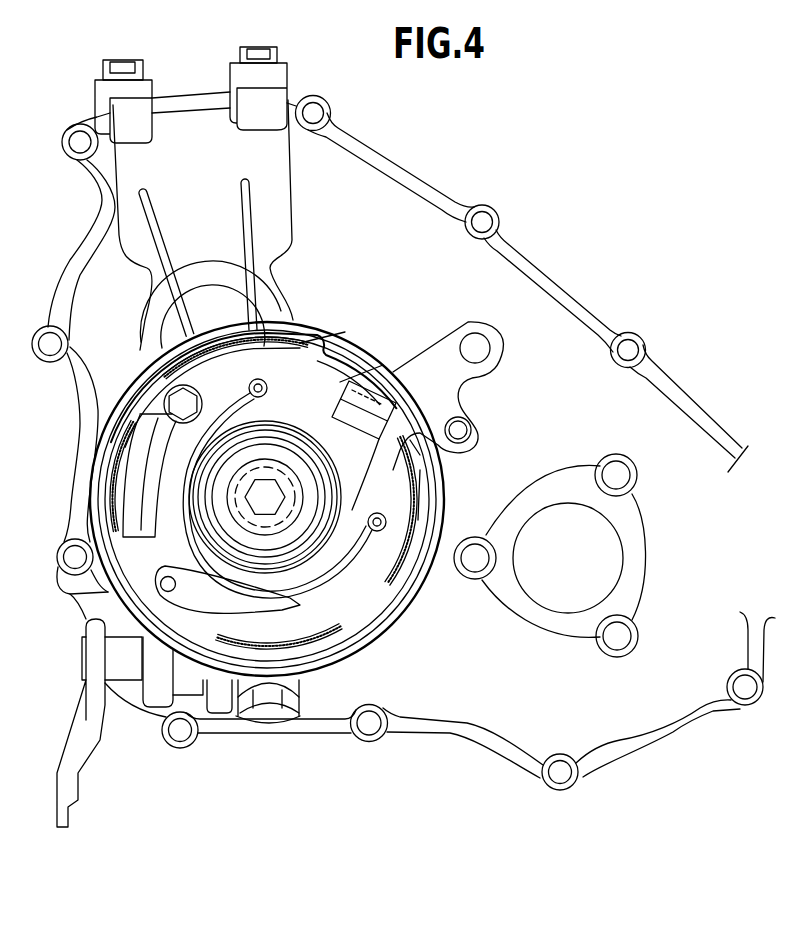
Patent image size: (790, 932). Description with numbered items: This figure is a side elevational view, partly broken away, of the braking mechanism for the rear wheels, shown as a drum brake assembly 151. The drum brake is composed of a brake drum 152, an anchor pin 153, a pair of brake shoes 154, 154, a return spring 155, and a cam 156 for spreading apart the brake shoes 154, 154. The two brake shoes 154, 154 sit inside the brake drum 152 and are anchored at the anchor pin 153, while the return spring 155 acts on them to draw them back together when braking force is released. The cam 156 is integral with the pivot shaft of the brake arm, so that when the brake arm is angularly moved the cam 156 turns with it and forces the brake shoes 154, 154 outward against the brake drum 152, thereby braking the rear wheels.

The belt tensioner assembly 151 is at (128, 358).
The brake drum 152 is at (287, 347).
The anchor pin 153 is at (160, 586).
The brake shoes 154 is at (305, 352).
The return spring 155 is at (163, 473).
The cam 156 is at (366, 415).